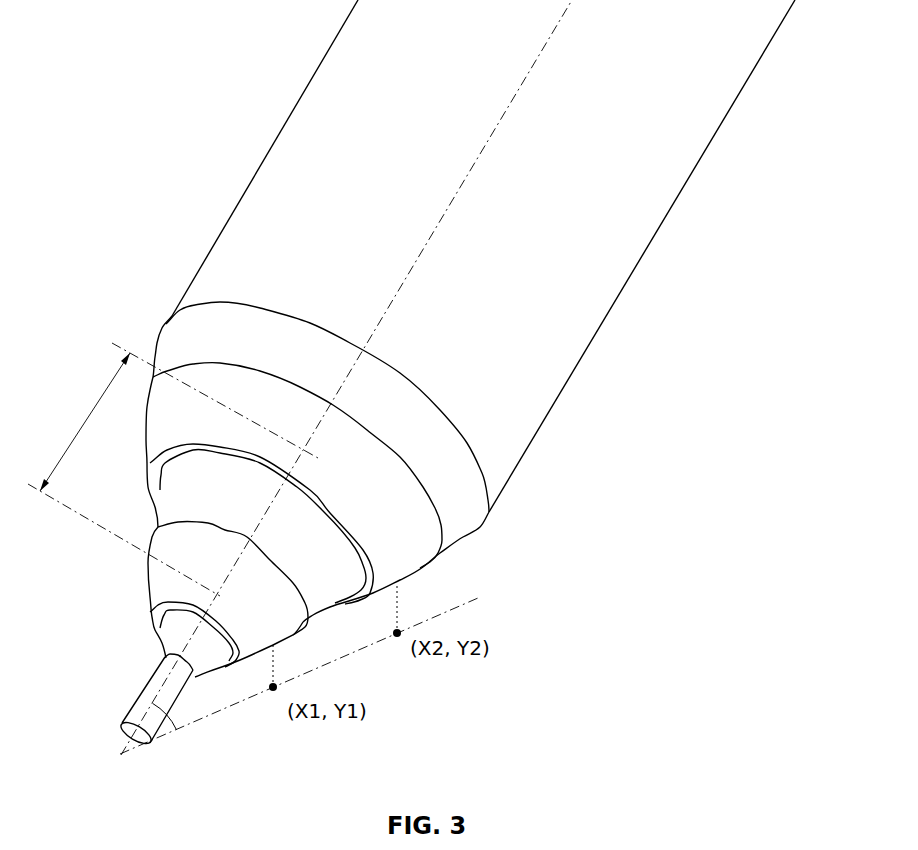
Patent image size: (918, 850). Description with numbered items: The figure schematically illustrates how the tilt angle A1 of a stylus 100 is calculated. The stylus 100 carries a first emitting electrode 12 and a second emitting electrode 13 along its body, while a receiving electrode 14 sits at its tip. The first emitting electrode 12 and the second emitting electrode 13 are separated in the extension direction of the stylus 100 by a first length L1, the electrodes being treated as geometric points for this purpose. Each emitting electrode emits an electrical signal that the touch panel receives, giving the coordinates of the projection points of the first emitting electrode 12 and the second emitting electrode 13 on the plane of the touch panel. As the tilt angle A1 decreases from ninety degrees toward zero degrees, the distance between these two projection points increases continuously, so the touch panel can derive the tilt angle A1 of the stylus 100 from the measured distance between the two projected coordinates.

The stylus 100 is at (207, 140).
The first emitting electrode 12 is at (273, 577).
The second emitting electrode 13 is at (375, 462).
The receiving electrode 14 is at (142, 698).
The first length L1 is at (173, 469).
The tilt angle A1 is at (180, 711).